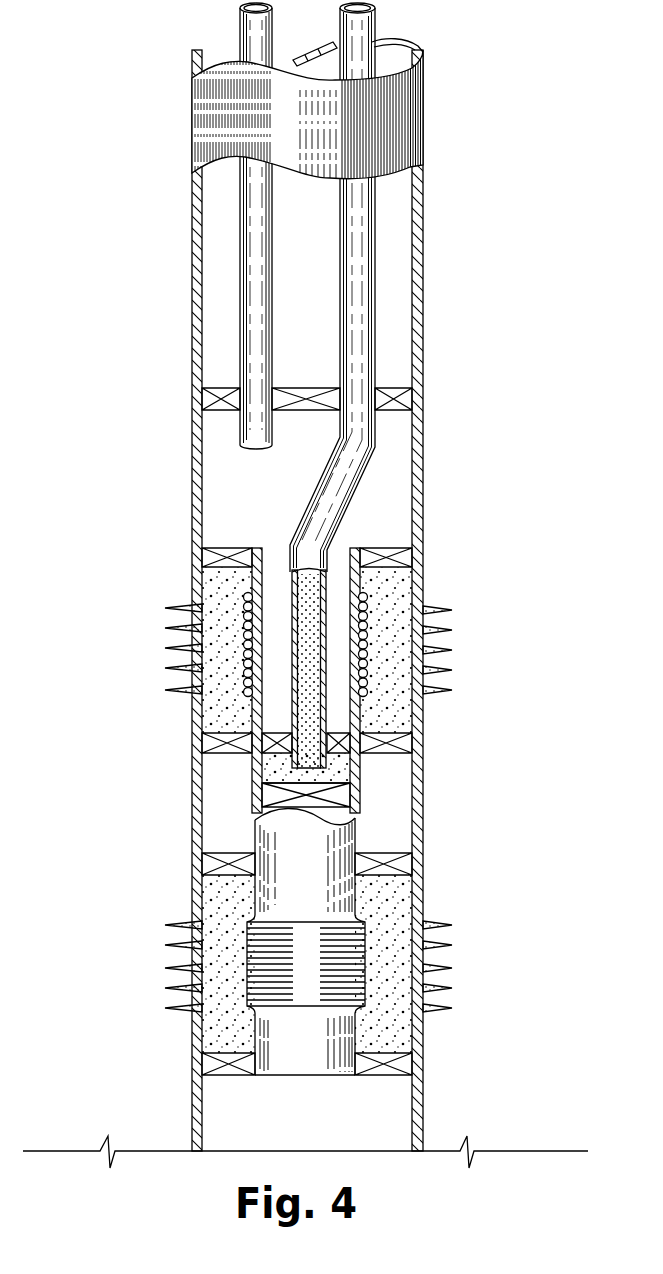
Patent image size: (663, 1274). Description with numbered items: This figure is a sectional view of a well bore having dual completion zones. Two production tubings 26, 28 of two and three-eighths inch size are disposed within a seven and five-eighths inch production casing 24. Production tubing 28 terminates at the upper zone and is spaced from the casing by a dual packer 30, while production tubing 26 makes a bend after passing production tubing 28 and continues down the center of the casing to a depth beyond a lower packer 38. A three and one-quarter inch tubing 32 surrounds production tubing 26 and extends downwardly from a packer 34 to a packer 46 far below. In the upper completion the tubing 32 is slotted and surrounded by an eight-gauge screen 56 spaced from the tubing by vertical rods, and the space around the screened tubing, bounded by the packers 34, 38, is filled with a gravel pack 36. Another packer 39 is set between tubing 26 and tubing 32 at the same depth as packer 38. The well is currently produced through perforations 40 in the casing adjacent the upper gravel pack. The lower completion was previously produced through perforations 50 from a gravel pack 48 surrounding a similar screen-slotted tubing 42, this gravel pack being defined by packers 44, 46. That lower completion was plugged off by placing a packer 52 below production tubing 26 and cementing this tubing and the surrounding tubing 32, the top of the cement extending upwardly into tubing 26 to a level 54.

The production casing 24 is at (205, 140).
The production tubing 26 is at (372, 25).
The production tubing 28 is at (240, 50).
The dual packer 30 is at (205, 404).
The tubing 32 is at (350, 880).
The packer 34 is at (208, 558).
The gravel pack 36 is at (307, 650).
The packer 38 is at (208, 747).
The packer 39 is at (280, 748).
The perforations 40 is at (165, 615).
The screen-slotted tubing 42 is at (248, 942).
The packer 44 is at (208, 870).
The packer 46 is at (208, 1070).
The gravel pack 48 is at (307, 964).
The perforations 50 is at (450, 970).
The packer 52 is at (312, 800).
The level of cement top 54 is at (306, 520).
The screen 56 is at (362, 687).